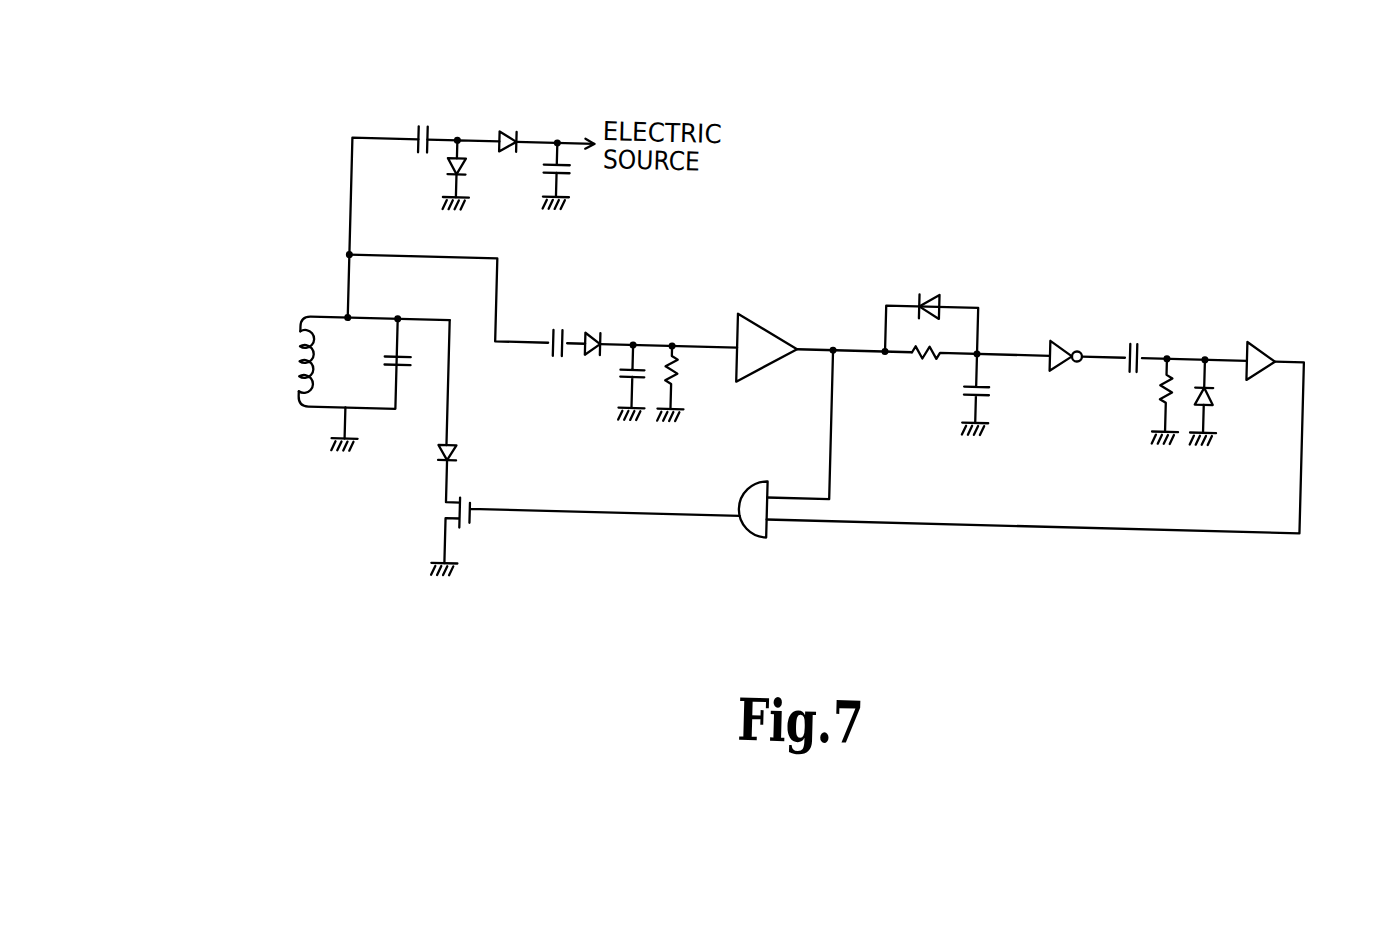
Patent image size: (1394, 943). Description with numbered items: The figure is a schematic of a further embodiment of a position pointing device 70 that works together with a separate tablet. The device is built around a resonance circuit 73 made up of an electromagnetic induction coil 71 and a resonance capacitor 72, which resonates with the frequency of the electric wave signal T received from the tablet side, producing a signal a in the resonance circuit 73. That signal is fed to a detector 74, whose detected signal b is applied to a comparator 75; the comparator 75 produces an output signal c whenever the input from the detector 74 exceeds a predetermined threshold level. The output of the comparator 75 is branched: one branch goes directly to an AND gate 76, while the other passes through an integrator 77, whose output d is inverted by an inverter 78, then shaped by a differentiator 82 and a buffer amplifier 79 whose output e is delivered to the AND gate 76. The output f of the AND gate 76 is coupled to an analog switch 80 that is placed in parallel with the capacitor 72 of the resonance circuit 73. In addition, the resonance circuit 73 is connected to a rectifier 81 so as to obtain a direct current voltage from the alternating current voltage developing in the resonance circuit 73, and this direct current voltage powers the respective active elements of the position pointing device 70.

The position pointing device 70 is at (313, 144).
The electromagnetic induction coil 71 is at (293, 391).
The resonance capacitor 72 is at (392, 383).
The resonance circuit 73 is at (260, 397).
The detector 74 is at (667, 317).
The comparator 75 is at (777, 341).
The AND gate 76 is at (745, 538).
The integrator 77 is at (926, 296).
The inverter 78 is at (1057, 340).
The buffer amplifier 79 is at (1263, 348).
The analog switch 80 is at (434, 514).
The rectifier 81 is at (506, 122).
The differentiator 82 is at (1217, 326).
The signal developing in the resonance circuit a is at (347, 199).
The signal after detection b is at (702, 354).
The output signal of the comparator c is at (848, 355).
The output of the integrator d is at (1003, 353).
The output of the buffer amplifier e is at (1287, 355).
The output of the AND gate f is at (582, 522).
The electric wave signal T is at (285, 376).